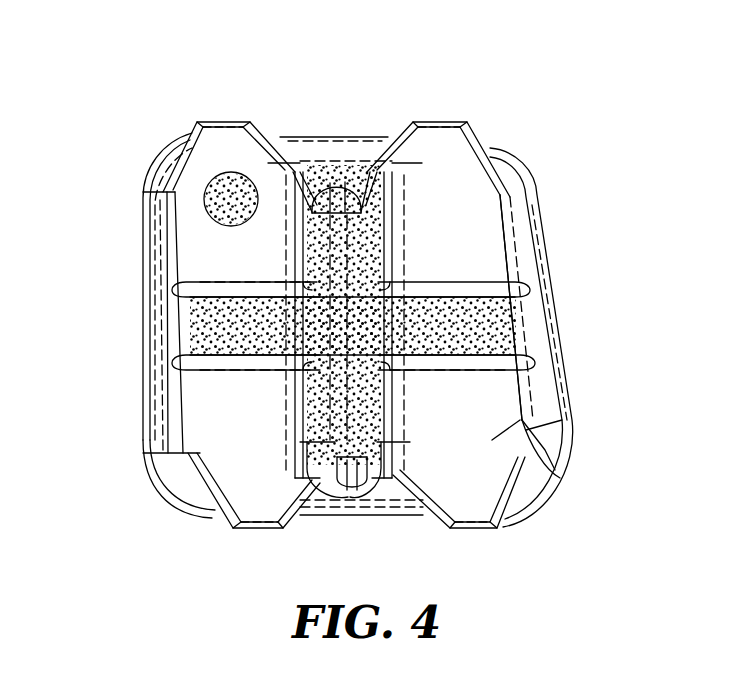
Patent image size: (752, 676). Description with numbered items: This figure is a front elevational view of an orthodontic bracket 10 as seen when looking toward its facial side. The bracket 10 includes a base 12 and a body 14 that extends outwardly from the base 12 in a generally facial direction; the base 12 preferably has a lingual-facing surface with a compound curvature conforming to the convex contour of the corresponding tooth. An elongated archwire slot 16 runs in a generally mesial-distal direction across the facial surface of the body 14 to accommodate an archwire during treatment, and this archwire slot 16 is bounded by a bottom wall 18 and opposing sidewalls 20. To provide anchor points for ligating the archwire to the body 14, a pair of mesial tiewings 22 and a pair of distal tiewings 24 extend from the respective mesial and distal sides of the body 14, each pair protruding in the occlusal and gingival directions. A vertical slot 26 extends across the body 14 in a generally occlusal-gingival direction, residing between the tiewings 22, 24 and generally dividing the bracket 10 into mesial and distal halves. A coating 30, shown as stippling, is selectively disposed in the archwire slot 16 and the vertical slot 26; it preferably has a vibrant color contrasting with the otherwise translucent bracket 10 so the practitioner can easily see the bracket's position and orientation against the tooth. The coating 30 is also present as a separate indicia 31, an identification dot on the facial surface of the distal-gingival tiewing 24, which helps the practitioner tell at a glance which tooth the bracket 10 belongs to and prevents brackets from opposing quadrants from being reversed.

The orthodontic bracket 10 is at (517, 84).
The base 12 is at (553, 297).
The body 14 is at (530, 388).
The archwire slot 16 is at (233, 325).
The bottom wall 18 is at (200, 338).
The sidewalls 20 is at (207, 300).
The mesial tiewings 22 is at (435, 135).
The distal tiewings 24 is at (222, 135).
The vertical slot 26 is at (360, 487).
The coating 30 is at (470, 320).
The indicia 31 is at (227, 200).